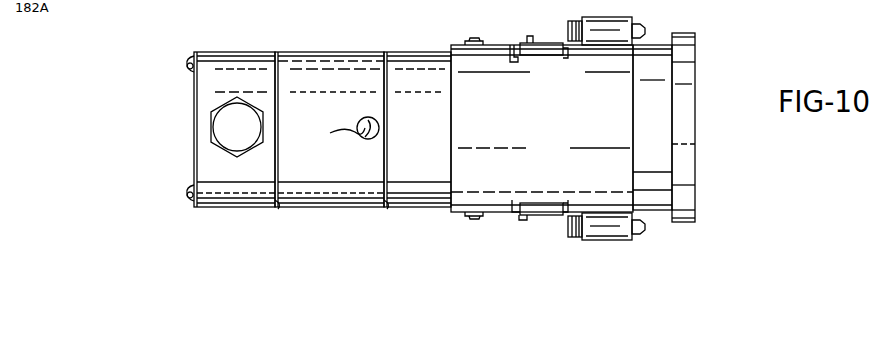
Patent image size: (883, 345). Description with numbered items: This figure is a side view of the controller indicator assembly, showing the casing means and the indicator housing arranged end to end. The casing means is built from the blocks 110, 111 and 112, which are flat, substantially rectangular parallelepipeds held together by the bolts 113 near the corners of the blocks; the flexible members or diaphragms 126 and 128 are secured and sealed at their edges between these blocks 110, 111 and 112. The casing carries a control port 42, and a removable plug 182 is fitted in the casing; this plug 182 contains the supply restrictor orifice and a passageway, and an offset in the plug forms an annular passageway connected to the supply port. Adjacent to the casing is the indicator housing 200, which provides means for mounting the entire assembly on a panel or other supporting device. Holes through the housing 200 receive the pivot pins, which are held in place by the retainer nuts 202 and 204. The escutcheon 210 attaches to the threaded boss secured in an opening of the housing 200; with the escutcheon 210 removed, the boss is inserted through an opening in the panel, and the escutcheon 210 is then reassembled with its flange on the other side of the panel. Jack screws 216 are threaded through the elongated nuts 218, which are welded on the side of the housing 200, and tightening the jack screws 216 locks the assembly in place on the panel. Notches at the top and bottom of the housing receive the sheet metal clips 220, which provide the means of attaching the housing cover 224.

The control port 42 is at (270, 160).
The block 110 is at (236, 62).
The block 111 is at (313, 62).
The block 112 is at (408, 57).
The bolt 113 is at (185, 62).
The diaphragm 126 is at (279, 209).
The diaphragm 128 is at (388, 209).
The removable plug 182 is at (240, 146).
The indicator housing 200 is at (590, 103).
The retainer nut 202 is at (522, 222).
The retainer nut 204 is at (472, 39).
The escutcheon 210 is at (690, 114).
The jack screw 216 is at (575, 238).
The elongated nut 218 is at (616, 30).
The sheet metal clip 220 is at (540, 36).
The housing cover 224 is at (505, 62).